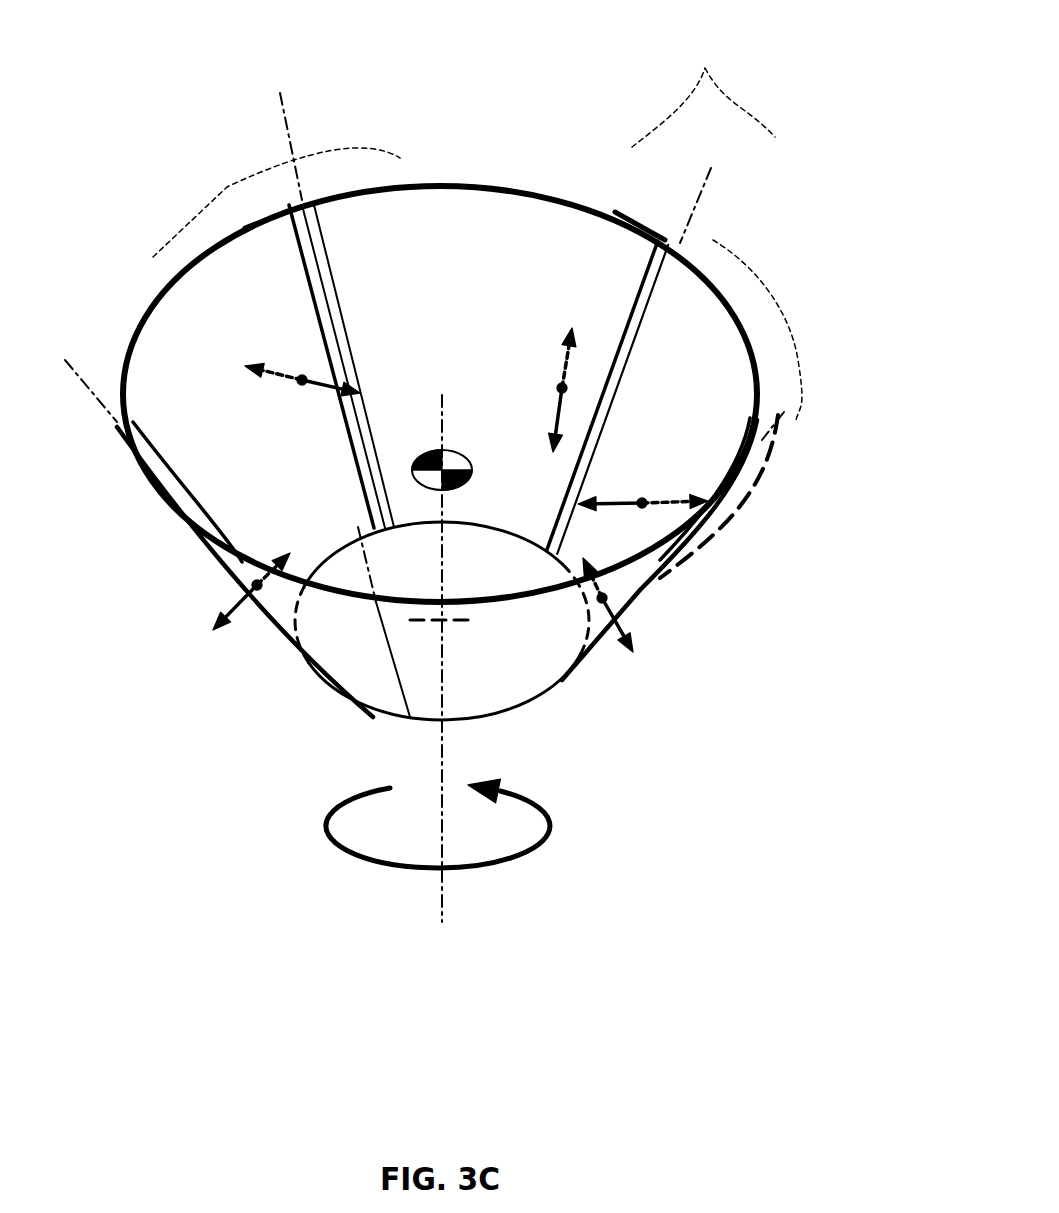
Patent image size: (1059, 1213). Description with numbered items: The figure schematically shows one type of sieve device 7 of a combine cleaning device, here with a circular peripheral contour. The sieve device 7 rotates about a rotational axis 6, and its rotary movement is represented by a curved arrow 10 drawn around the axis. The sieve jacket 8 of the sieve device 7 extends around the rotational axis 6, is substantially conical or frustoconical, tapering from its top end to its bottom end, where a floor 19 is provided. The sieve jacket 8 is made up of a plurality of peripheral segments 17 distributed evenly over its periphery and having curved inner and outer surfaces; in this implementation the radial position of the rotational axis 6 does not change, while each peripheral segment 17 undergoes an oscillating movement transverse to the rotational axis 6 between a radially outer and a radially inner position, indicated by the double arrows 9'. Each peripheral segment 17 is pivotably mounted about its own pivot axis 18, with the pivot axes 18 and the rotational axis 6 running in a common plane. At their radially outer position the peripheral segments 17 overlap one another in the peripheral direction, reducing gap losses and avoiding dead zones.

The rotational axis 6 is at (443, 912).
The sieve device 7 is at (145, 588).
The sieve jacket 8 is at (743, 503).
The double arrows 9' is at (696, 372).
The curved arrow 10 is at (335, 853).
The peripheral segments 17 is at (358, 222).
The pivot axis 18 is at (703, 188).
The floor 19 is at (473, 572).